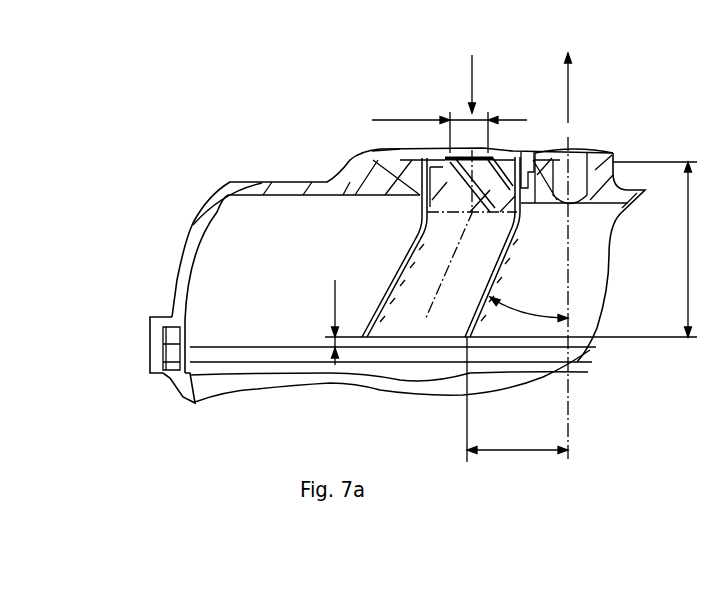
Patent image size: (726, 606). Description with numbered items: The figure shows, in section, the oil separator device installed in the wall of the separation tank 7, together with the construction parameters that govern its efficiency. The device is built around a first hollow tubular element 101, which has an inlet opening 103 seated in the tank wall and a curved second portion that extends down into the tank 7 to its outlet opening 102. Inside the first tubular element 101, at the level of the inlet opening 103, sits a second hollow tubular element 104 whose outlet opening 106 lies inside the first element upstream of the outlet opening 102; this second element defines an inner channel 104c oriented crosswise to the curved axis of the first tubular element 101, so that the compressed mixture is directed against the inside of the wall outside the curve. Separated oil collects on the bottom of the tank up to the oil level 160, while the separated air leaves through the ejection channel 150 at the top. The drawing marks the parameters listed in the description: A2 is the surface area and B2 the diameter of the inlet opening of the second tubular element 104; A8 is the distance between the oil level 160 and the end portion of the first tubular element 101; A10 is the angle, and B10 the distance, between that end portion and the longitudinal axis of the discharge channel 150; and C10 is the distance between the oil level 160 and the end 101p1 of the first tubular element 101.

The separation tank 7 is at (205, 293).
The first hollow tubular element 101 is at (380, 275).
The end of the first tubular element 101p1 is at (362, 157).
The outlet opening 102 is at (425, 320).
The inlet opening 103 is at (410, 190).
The second hollow tubular element 104 is at (438, 187).
The inner channel 104c is at (488, 206).
The outlet opening of the second tubular element 106 is at (503, 185).
The ejection channel 150 is at (580, 182).
The oil level 160 is at (277, 350).
The surface area of the opening A2 is at (468, 153).
The diameter of the opening B2 is at (449, 123).
The distance between oil level and end portion A8 is at (324, 322).
The angle between end portion and discharge channel axis A10 is at (529, 304).
The distance between end portion and discharge channel axis B10 is at (517, 399).
The distance between oil level and end of first tubular element C10 is at (655, 249).